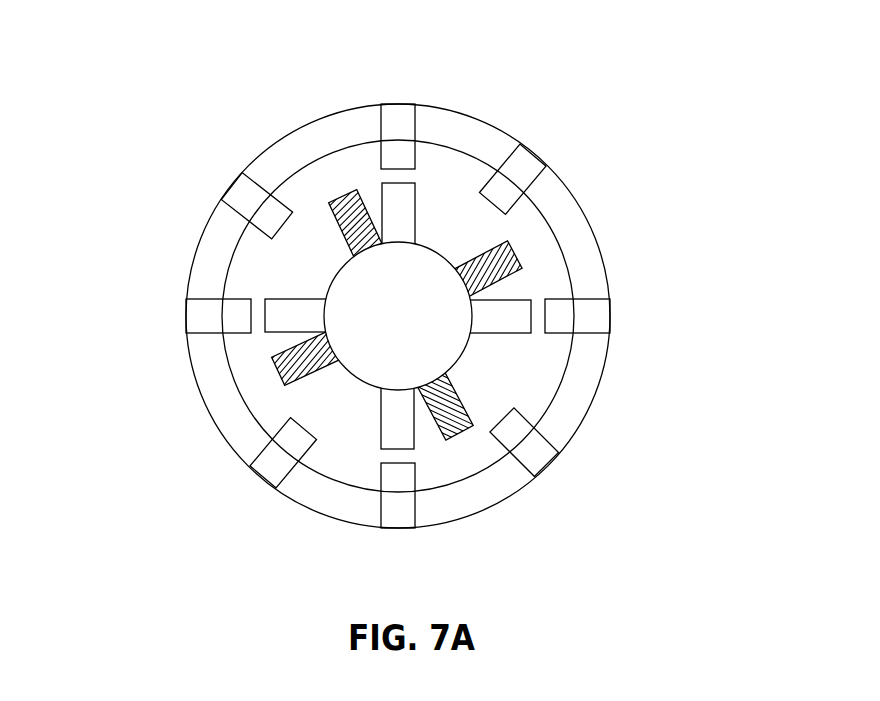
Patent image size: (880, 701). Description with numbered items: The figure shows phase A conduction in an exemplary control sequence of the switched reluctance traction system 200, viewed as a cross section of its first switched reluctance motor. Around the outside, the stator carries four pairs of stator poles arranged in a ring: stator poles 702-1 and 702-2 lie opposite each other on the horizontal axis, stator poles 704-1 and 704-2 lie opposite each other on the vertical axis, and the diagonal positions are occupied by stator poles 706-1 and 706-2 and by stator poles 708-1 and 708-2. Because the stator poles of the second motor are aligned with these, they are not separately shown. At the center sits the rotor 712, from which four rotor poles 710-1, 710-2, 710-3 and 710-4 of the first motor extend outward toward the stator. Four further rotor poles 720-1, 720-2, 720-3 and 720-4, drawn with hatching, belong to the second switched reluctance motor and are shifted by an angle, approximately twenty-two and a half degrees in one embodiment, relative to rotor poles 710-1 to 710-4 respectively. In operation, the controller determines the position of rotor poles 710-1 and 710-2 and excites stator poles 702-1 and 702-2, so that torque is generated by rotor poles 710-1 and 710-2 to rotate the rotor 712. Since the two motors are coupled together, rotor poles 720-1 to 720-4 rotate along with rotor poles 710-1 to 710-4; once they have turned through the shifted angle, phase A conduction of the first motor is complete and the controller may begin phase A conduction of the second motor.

The switched reluctance traction system 200 is at (643, 55).
The stator pole 702-1 is at (198, 315).
The stator pole 702-2 is at (598, 318).
The stator pole 704-1 is at (413, 115).
The stator pole 704-2 is at (400, 510).
The stator pole 706-1 is at (247, 190).
The stator pole 706-2 is at (542, 453).
The stator pole 708-1 is at (532, 167).
The stator pole 708-2 is at (288, 470).
The rotor pole 710-1 is at (313, 307).
The rotor pole 710-2 is at (415, 210).
The rotor pole 710-3 is at (505, 323).
The rotor pole 710-4 is at (397, 410).
The rotor 712 is at (418, 328).
The rotor pole 720-1 is at (317, 368).
The rotor pole 720-2 is at (343, 217).
The rotor pole 720-3 is at (495, 260).
The rotor pole 720-4 is at (450, 402).